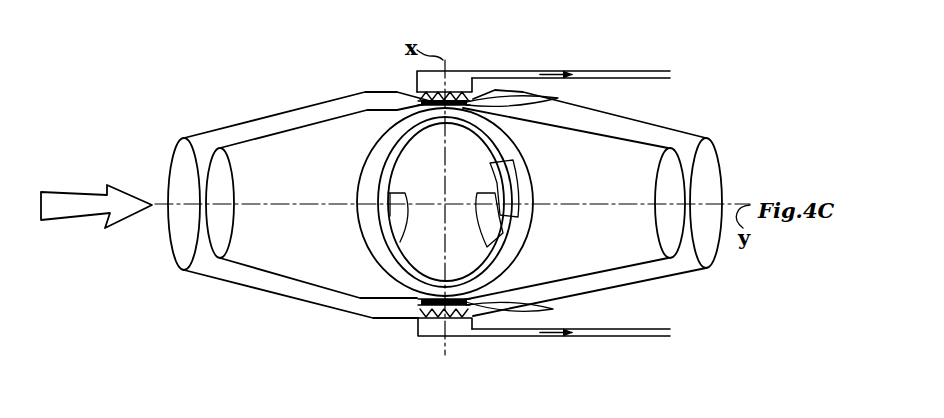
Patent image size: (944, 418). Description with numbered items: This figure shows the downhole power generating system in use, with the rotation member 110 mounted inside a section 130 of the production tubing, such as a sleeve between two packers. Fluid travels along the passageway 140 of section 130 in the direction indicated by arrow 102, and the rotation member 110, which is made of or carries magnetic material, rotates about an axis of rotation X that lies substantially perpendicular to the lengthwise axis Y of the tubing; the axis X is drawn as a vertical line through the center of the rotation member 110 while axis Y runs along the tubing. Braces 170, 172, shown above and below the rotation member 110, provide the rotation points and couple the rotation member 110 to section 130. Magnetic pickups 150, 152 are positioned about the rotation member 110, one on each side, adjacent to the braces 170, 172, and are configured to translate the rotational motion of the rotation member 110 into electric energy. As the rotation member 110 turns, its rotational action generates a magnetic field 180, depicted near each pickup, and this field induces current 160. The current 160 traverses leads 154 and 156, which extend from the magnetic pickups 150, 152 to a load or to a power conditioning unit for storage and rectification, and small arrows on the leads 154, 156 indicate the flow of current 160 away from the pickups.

The gas flow direction 102 is at (61, 200).
The rotation member 110 is at (375, 148).
The section of the production tubing 130 is at (302, 306).
The passageway 140 is at (252, 185).
The magnetic pickup 150 is at (455, 92).
The magnetic pickup 152 is at (457, 318).
The lead 154 is at (627, 70).
The lead 156 is at (627, 337).
The current 160 is at (557, 73).
The brace 170 is at (420, 105).
The brace 172 is at (417, 311).
The magnetic field 180 is at (558, 98).